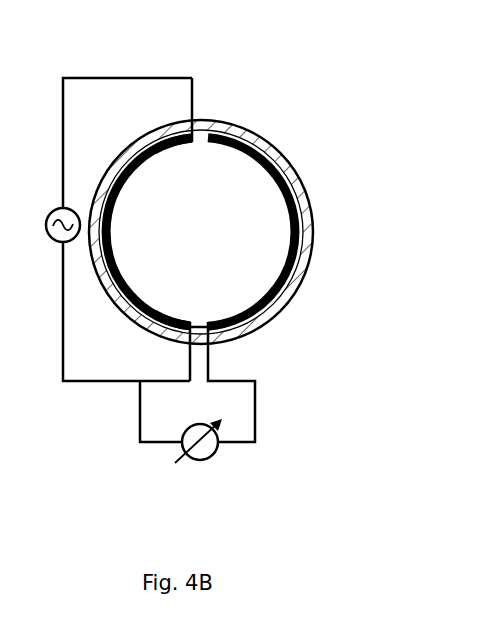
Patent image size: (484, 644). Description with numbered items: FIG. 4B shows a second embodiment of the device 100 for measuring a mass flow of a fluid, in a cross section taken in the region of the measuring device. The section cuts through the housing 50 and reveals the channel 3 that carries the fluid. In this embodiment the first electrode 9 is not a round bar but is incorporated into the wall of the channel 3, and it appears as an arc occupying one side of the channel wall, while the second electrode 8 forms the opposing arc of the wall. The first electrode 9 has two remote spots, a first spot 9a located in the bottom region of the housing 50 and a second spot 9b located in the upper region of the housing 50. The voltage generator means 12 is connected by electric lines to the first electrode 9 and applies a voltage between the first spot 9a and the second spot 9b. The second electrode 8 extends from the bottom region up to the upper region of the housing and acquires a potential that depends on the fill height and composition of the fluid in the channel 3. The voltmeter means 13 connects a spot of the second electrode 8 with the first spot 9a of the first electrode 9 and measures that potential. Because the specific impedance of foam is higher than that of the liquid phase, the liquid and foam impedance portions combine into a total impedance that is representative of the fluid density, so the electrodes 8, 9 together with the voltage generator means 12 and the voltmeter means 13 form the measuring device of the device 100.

The device 100 is at (222, 117).
The housing 50 is at (258, 128).
The channel 3 is at (243, 293).
The second electrode 8 is at (288, 212).
The first electrode 9 is at (115, 207).
The first spot 9a is at (188, 320).
The second spot 9b is at (190, 150).
The voltage generator means 12 is at (52, 245).
The voltmeter means 13 is at (213, 458).